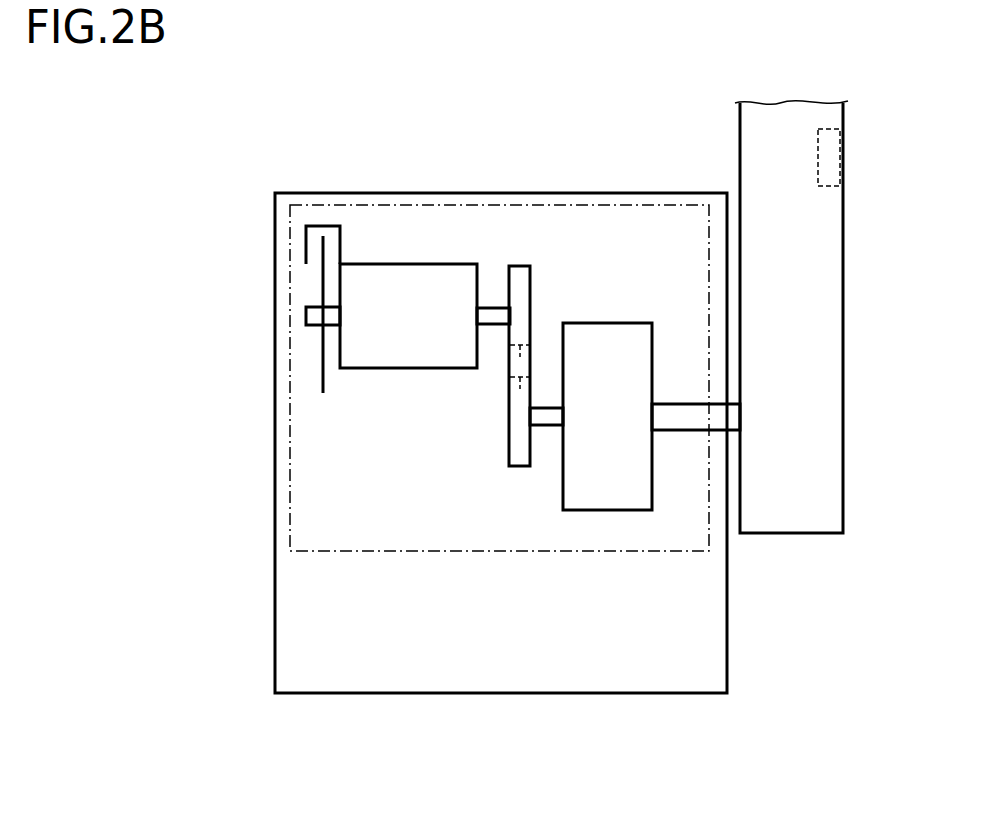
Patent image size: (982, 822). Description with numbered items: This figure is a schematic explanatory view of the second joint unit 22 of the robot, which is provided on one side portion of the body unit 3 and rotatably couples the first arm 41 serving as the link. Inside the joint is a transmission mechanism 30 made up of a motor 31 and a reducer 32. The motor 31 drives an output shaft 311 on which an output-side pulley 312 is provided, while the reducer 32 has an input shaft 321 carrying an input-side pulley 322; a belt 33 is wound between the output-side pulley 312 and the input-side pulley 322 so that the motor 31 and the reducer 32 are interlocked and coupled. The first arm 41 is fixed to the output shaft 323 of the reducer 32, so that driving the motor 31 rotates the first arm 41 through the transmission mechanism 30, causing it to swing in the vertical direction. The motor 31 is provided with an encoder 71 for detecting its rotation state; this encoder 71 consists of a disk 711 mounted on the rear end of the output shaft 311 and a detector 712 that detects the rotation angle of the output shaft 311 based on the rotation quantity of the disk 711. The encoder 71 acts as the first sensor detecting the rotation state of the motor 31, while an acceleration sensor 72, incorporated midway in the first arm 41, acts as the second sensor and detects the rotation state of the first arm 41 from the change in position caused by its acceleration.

The body unit 3 is at (308, 704).
The second joint unit 22 is at (280, 386).
The transmission mechanism 30 is at (405, 472).
The motor 31 is at (410, 263).
The output shaft 311 is at (495, 307).
The output-side pulley 312 is at (526, 357).
The reducer 32 is at (623, 511).
The input shaft 321 is at (548, 426).
The input-side pulley 322 is at (510, 377).
The output shaft 323 is at (690, 431).
The belt 33 is at (509, 428).
The first arm 41 is at (843, 310).
The encoder 71 is at (343, 110).
The disk 711 is at (323, 288).
The detector 712 is at (323, 226).
The acceleration sensor 72 is at (831, 186).